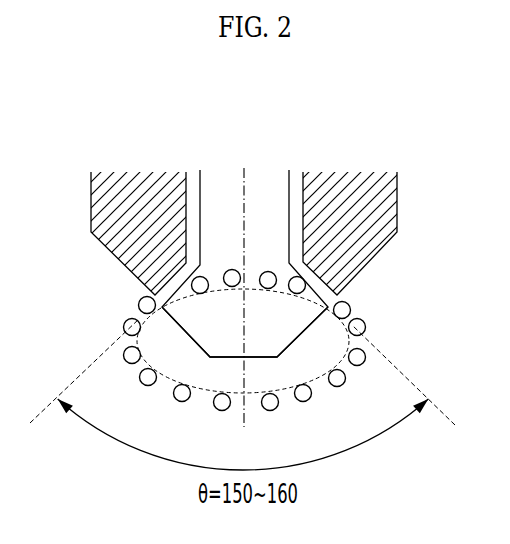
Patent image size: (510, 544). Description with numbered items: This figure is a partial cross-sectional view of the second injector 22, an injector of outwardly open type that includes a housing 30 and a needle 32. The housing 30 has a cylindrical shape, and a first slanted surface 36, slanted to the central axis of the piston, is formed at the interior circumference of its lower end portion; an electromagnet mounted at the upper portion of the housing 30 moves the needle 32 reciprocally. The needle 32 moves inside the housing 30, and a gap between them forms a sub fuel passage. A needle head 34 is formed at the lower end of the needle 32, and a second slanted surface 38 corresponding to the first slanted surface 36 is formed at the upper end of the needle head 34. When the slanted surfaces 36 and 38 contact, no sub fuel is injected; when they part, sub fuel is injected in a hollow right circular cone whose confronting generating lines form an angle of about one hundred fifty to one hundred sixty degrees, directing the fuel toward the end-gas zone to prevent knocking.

The second injector 22 is at (279, 246).
The housing 30 is at (388, 200).
The needle 32 is at (272, 178).
The needle head 34 is at (295, 337).
The first slanted surface 36 is at (323, 303).
The second slanted surface 38 is at (303, 265).